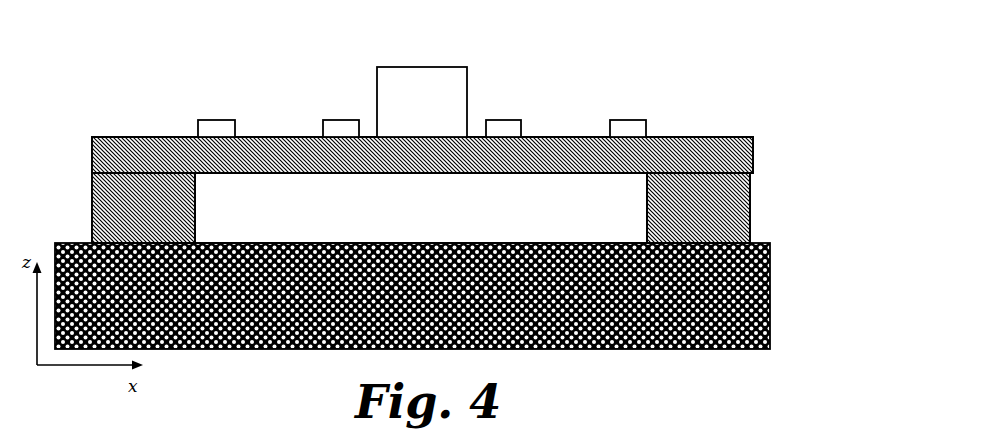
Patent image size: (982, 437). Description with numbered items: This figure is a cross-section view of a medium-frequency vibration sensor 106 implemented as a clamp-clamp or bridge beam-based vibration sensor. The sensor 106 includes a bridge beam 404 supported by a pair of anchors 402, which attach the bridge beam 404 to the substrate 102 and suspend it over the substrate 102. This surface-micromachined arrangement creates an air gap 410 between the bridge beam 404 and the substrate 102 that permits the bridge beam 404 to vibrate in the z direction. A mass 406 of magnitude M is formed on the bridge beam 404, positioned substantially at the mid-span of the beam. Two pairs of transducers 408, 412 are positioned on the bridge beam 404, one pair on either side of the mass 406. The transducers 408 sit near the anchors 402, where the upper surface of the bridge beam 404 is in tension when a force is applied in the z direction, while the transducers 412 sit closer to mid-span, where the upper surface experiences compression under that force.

The substrate 102 is at (772, 312).
The medium-frequency vibration sensor 106 is at (772, 135).
The anchors 402 is at (421, 208).
The bridge beam 404 is at (422, 155).
The mass 406 is at (422, 102).
The transducers 408 is at (207, 117).
The air gap 410 is at (421, 208).
The transducers 412 is at (340, 117).